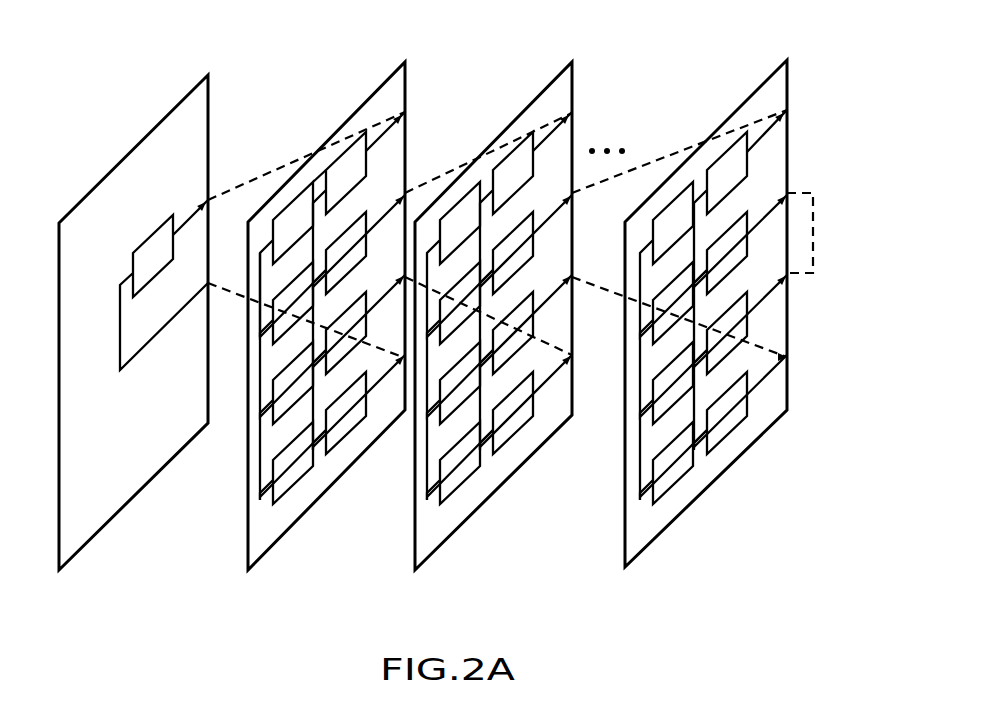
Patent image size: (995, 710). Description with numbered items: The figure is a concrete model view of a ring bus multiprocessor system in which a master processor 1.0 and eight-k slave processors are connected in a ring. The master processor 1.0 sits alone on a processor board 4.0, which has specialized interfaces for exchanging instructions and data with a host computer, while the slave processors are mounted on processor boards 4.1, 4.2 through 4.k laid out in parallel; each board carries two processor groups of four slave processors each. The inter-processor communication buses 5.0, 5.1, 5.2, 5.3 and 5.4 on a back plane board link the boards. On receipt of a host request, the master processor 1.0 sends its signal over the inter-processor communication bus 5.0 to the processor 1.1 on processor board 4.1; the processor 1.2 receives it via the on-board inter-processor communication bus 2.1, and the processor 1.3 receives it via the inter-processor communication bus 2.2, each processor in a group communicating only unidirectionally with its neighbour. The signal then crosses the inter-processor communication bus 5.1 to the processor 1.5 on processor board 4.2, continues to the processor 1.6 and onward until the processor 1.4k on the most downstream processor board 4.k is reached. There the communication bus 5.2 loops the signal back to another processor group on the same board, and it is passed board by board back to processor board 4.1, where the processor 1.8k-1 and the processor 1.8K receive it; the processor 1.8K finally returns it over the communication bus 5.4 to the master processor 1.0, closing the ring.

The master processor 1.0 is at (153, 246).
The processor 1.1 is at (322, 155).
The processor 1.2 is at (297, 197).
The processor 1.3 is at (278, 346).
The processor 1.5 is at (512, 150).
The processor 1.6 is at (458, 197).
The processor 1.8K is at (350, 440).
The processor 1.8k-1 is at (293, 490).
The processor 1.4k is at (748, 200).
The inter-processor communication bus 2.1 is at (323, 193).
The inter-processor communication bus 2.2 is at (262, 320).
The processor board 4.0 is at (63, 568).
The processor board 4.1 is at (245, 560).
The processor board 4.2 is at (420, 560).
The processor board 4.k is at (642, 557).
The inter-processor communication bus 5.0 is at (250, 176).
The inter-processor communication bus 5.1 is at (437, 178).
The inter-processor communication bus 5.2 is at (813, 233).
The inter-processor communication bus 5.3 is at (555, 352).
The inter-processor communication bus 5.4 is at (383, 347).